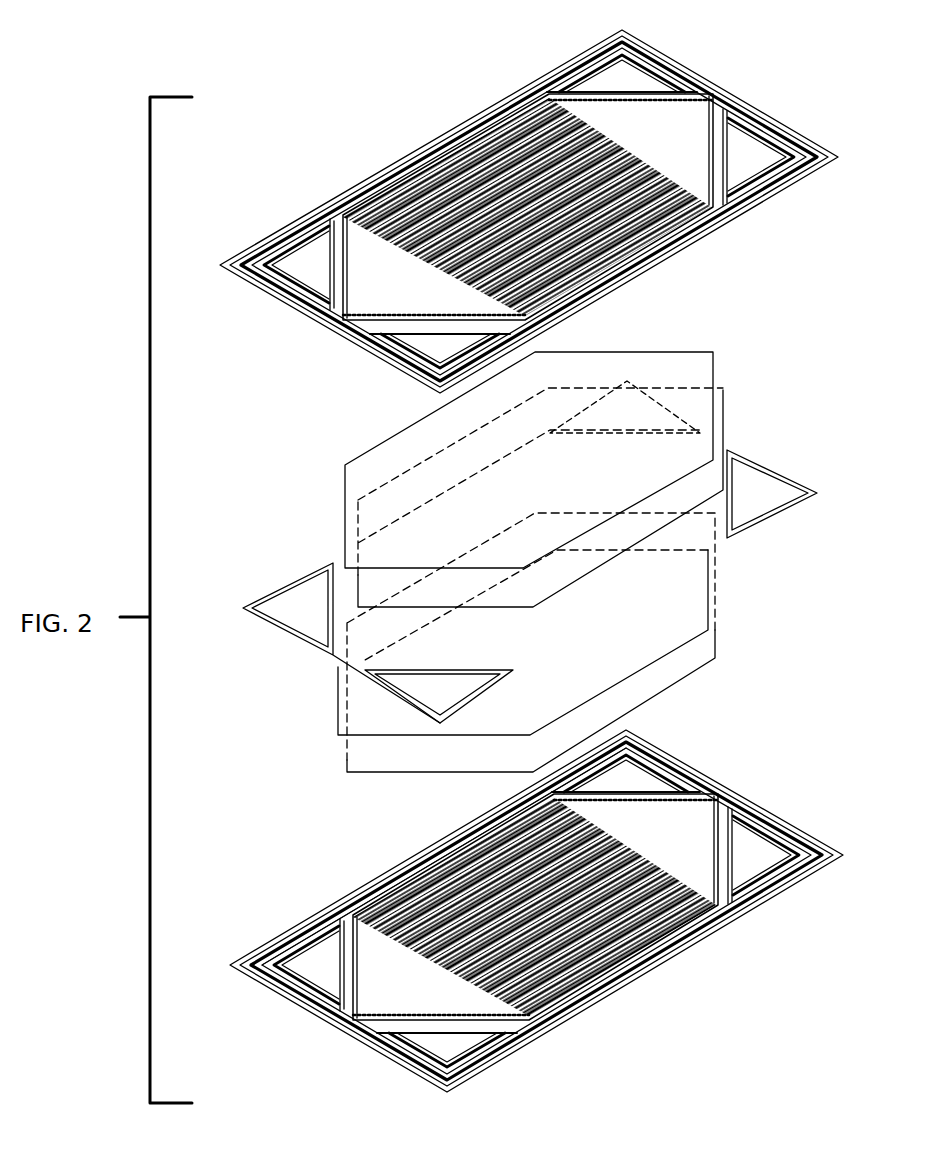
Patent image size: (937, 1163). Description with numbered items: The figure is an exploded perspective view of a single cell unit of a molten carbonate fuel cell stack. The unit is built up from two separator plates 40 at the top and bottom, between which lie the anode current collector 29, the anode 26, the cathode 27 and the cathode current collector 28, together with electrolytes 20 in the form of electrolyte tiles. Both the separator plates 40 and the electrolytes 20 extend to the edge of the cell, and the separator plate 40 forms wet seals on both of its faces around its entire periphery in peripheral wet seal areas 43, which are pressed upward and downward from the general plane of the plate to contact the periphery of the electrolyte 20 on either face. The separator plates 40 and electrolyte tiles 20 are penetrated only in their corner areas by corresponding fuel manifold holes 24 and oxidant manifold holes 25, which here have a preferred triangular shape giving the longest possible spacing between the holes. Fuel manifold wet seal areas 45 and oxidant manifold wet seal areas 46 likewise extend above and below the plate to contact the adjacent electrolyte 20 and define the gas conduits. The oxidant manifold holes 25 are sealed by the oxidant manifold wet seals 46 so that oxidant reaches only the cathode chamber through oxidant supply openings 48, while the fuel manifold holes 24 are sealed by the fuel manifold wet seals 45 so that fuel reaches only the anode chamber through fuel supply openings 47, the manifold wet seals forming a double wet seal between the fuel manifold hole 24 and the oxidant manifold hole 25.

The electrolyte 20 is at (762, 455).
The fuel manifold hole 24 is at (750, 163).
The oxidant manifold hole 25 is at (630, 77).
The anode 26 is at (725, 427).
The cathode 27 is at (707, 577).
The cathode current collector 28 is at (717, 637).
The anode current collector 29 is at (717, 363).
The separator plate 40 is at (534, 568).
The peripheral wet seal area 43 is at (772, 120).
The fuel manifold wet seal area 45 is at (797, 138).
The oxidant manifold wet seal area 46 is at (582, 72).
The fuel supply opening 47 is at (770, 907).
The oxidant supply opening 48 is at (668, 812).